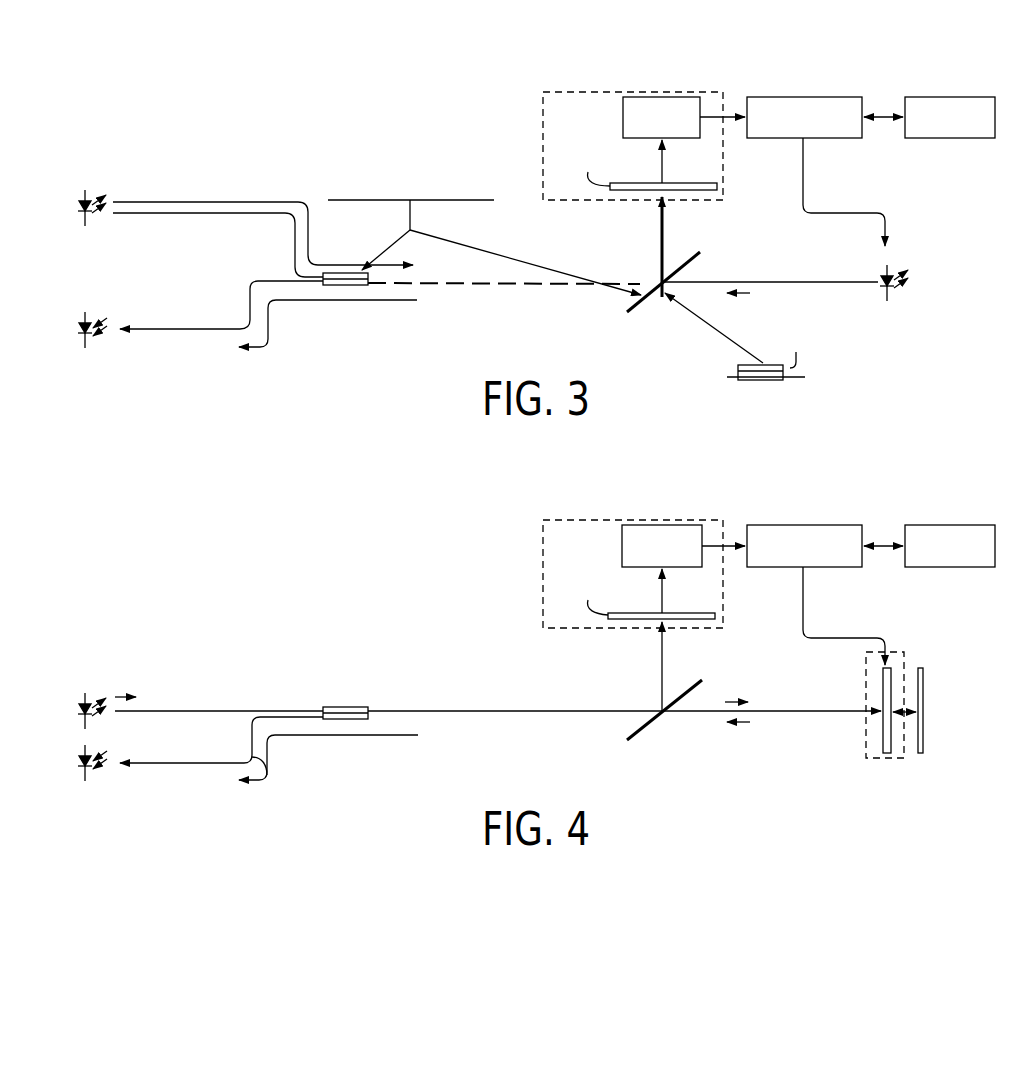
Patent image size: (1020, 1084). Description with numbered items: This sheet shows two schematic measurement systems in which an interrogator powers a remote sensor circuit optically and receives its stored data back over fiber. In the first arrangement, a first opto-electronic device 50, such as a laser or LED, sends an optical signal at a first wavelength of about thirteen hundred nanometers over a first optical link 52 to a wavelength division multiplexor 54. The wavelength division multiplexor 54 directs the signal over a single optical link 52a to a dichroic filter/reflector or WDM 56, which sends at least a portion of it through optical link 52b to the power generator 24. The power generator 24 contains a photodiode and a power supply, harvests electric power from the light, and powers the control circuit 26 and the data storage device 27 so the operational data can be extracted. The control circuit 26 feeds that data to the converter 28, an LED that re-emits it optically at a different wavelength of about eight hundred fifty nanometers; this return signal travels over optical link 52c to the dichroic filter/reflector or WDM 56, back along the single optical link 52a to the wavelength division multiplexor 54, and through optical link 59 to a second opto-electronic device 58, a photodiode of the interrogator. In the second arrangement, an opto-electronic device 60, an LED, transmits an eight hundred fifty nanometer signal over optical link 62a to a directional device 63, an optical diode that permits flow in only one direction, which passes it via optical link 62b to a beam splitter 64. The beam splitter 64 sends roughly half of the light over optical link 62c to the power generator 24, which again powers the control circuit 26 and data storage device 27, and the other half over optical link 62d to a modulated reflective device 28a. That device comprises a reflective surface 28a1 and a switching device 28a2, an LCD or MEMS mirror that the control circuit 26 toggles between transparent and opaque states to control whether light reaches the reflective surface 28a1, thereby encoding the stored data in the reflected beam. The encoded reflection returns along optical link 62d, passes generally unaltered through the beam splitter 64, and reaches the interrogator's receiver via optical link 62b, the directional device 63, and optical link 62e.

In FIG. 3, the power generator 24 is at (543, 122).
In FIG. 4, the power generator 24 is at (543, 550).
In FIG. 3, the control circuit 26 is at (840, 139).
In FIG. 4, the control circuit 26 is at (840, 567).
In FIG. 3, the data storage device 27 is at (975, 139).
In FIG. 4, the data storage device 27 is at (975, 567).
In FIG. 3, the converter 28 is at (885, 290).
In FIG. 4, the modulated reflective device 28a is at (893, 656).
In FIG. 4, the reflective surface 28a1 is at (925, 695).
In FIG. 4, the switching device 28a2 is at (882, 683).
In FIG. 3, the first opto-electronic device 50 is at (88, 193).
In FIG. 3, the first optical link 52 is at (218, 216).
In FIG. 3, the single optical link 52a is at (522, 285).
In FIG. 3, the optical link 52b is at (660, 250).
In FIG. 3, the optical link 52c is at (822, 280).
In FIG. 3, the wavelength division multiplexor 54 is at (345, 287).
In FIG. 3, the dichroic filter/reflector or WDM 56 is at (700, 255).
In FIG. 3, the second opto-electronic device 58 is at (88, 315).
In FIG. 3, the optical link 59 is at (250, 289).
In FIG. 4, the opto-electronic device 60 is at (88, 698).
In FIG. 4, the optical link 62a is at (265, 709).
In FIG. 4, the optical link 62b is at (520, 713).
In FIG. 4, the optical link 62c is at (663, 666).
In FIG. 4, the optical link 62d is at (852, 715).
In FIG. 4, the optical link 62e is at (268, 778).
In FIG. 4, the directional device 63 is at (365, 705).
In FIG. 4, the beam splitter 64 is at (660, 718).